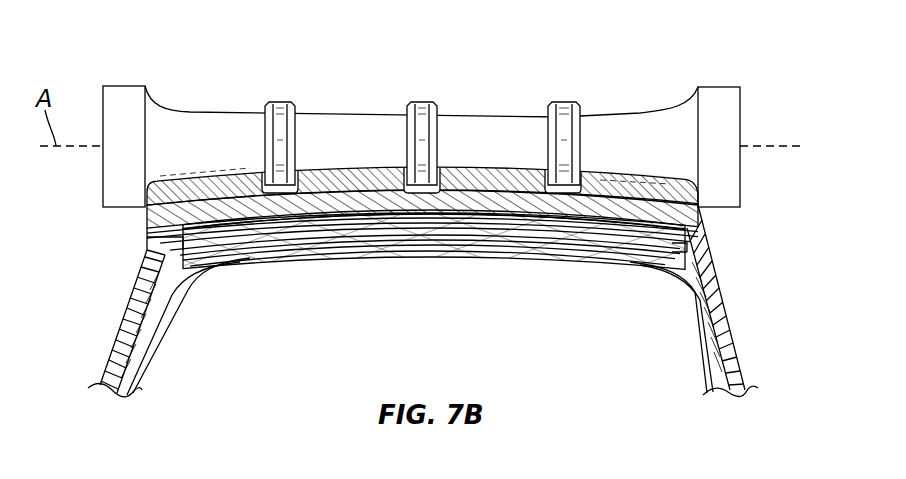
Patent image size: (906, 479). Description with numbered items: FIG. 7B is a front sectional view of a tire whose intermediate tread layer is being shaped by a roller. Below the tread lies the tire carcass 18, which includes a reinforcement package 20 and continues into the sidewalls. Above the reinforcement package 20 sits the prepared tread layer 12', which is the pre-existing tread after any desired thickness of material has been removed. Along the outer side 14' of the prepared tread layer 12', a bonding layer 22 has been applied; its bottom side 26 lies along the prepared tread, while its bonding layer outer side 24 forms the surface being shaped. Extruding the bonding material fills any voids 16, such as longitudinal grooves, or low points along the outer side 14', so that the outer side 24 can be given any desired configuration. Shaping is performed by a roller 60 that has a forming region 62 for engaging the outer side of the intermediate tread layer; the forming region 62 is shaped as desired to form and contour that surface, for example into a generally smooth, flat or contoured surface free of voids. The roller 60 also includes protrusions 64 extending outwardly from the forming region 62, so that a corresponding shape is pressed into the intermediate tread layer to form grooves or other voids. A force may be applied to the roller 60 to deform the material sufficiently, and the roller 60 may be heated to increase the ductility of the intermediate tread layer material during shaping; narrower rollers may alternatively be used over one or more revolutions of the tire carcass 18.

The prepared tread layer 12' is at (422, 180).
The outer side of the prepared tread layer 14' is at (422, 166).
The voids 16 is at (552, 198).
The tire carcass 18 is at (730, 358).
The reinforcement package 20 is at (672, 256).
The bonding layer 22 is at (450, 215).
The bonding layer outer side 24 is at (632, 173).
The bottom side of bonding layer 26 is at (463, 196).
The roller 60 is at (717, 88).
The forming region 62 is at (615, 110).
The protrusions 64 is at (563, 101).